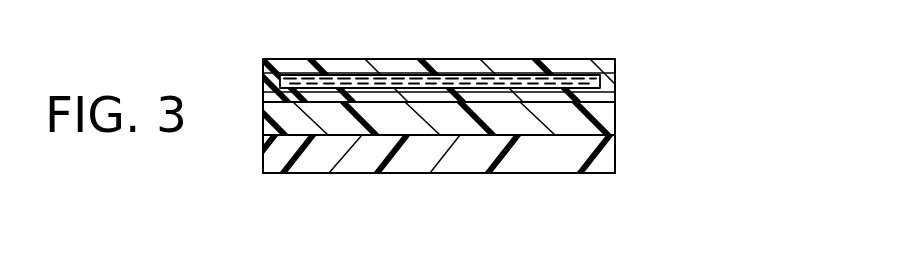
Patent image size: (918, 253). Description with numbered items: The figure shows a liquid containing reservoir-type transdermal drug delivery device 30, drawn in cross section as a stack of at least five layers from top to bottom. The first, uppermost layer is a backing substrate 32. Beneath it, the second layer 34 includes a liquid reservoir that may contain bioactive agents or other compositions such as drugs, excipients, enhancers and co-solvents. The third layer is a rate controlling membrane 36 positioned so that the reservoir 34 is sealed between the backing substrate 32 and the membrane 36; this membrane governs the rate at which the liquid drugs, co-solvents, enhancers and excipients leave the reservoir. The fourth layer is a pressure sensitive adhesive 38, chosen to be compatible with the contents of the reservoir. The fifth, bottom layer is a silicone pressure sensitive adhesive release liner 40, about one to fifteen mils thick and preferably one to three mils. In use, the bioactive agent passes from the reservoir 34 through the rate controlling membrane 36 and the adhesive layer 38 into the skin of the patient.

The liquid containing reservoir-type drug delivery device 30 is at (683, 63).
The backing substrate 32 is at (443, 65).
The liquid reservoir 34 is at (585, 102).
The rate controlling membrane 36 is at (600, 83).
The pressure sensitive adhesive 38 is at (557, 120).
The silicone pressure sensitive adhesive release liner 40 is at (458, 158).